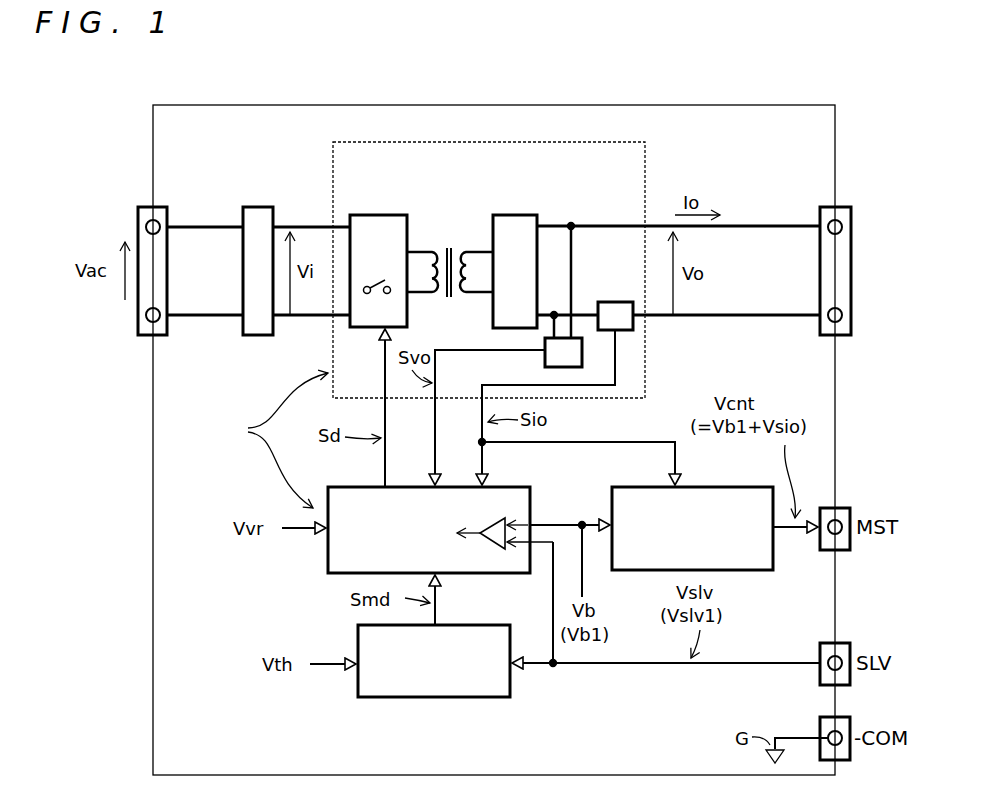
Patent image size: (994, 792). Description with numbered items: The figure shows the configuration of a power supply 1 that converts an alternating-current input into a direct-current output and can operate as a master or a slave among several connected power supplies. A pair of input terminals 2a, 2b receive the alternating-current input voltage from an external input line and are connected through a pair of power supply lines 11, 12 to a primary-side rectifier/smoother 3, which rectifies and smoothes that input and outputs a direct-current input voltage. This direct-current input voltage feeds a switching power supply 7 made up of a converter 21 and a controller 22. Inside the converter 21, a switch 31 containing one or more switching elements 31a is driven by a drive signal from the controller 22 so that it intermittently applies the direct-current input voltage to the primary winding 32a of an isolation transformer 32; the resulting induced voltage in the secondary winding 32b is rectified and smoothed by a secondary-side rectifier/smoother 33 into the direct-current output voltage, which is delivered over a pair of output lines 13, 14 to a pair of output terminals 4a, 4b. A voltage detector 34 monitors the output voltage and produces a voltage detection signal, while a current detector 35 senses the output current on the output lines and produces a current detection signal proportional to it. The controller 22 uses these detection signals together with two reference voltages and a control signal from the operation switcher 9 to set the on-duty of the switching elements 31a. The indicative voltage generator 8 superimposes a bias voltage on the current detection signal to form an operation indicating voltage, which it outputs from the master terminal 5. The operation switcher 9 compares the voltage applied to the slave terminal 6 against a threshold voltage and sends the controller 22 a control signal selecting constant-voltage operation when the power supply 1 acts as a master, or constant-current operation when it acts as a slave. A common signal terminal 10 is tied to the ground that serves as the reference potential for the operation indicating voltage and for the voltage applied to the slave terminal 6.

The power supply 1 is at (483, 88).
The input terminal 2a is at (156, 221).
The input terminal 2b is at (156, 322).
The primary-side rectifier/smoother 3 is at (262, 207).
The output terminal 4a is at (832, 221).
The output terminal 4b is at (832, 322).
The master terminal 5 is at (832, 521).
The slave terminal 6 is at (832, 657).
The switching power supply 7 is at (276, 440).
The indicative voltage generator 8 is at (651, 487).
The operation switcher 9 is at (489, 625).
The common signal terminal 10 is at (829, 733).
The power supply line 11 is at (217, 226).
The power supply line 12 is at (219, 317).
The output line 13 is at (750, 225).
The output line 14 is at (735, 317).
The converter 21 is at (533, 142).
The controller 22 is at (506, 487).
The switch 31 is at (375, 215).
The switching element 31a is at (369, 285).
The isolation transformer 32 is at (449, 233).
The primary winding 32a is at (431, 250).
The secondary winding 32b is at (467, 250).
The secondary-side rectifier/smoother 33 is at (518, 215).
The voltage detector 34 is at (545, 360).
The current detector 35 is at (612, 302).